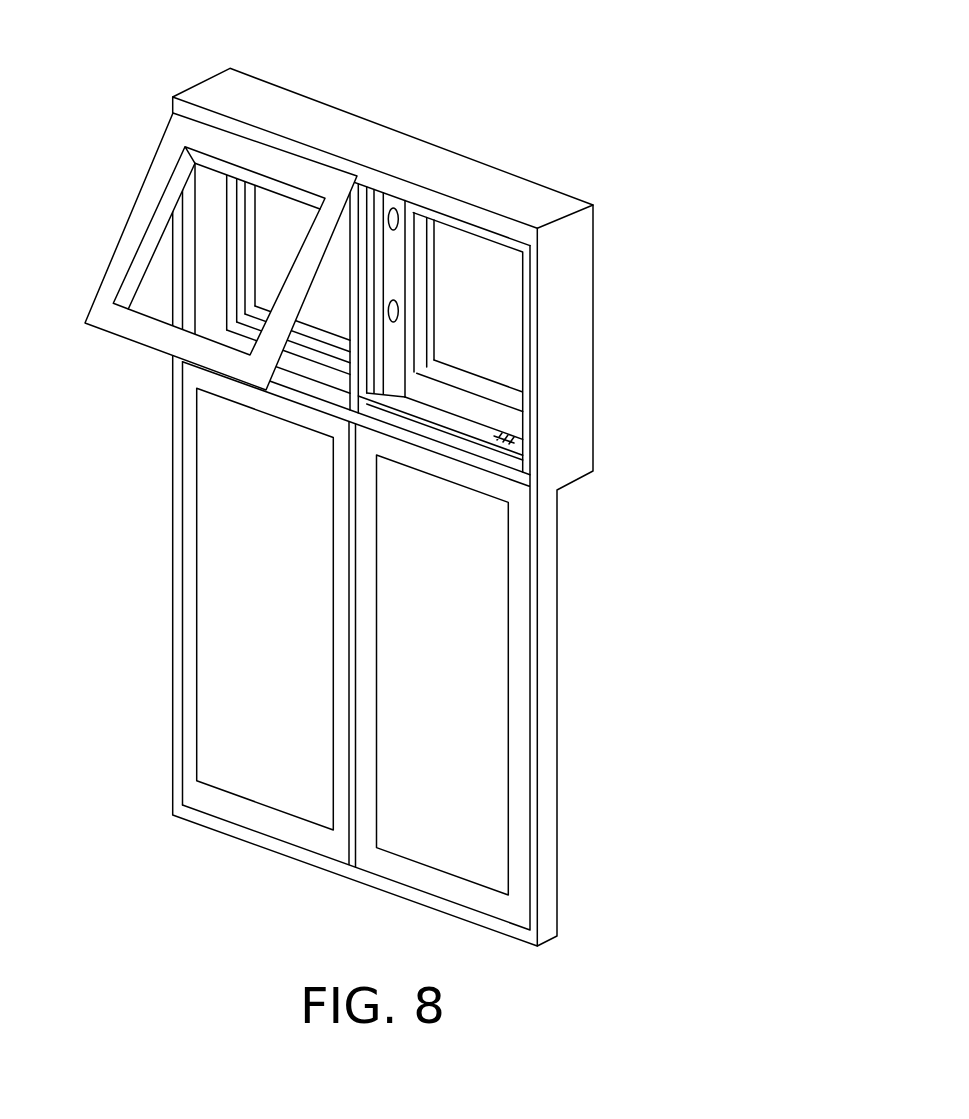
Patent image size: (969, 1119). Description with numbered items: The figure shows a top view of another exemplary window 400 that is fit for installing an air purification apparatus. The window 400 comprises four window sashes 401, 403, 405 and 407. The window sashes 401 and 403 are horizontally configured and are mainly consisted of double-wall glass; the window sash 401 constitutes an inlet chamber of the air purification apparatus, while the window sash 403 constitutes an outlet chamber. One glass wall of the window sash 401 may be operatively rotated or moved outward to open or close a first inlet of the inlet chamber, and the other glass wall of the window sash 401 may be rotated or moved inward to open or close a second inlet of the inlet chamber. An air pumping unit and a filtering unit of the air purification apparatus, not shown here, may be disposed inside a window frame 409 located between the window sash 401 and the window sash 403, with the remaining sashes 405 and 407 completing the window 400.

The window 400 is at (260, 105).
The window sash 401 is at (215, 233).
The window sash 403 is at (487, 330).
The window sash 405 is at (260, 680).
The window sash 407 is at (477, 712).
The window frame 409 is at (395, 272).